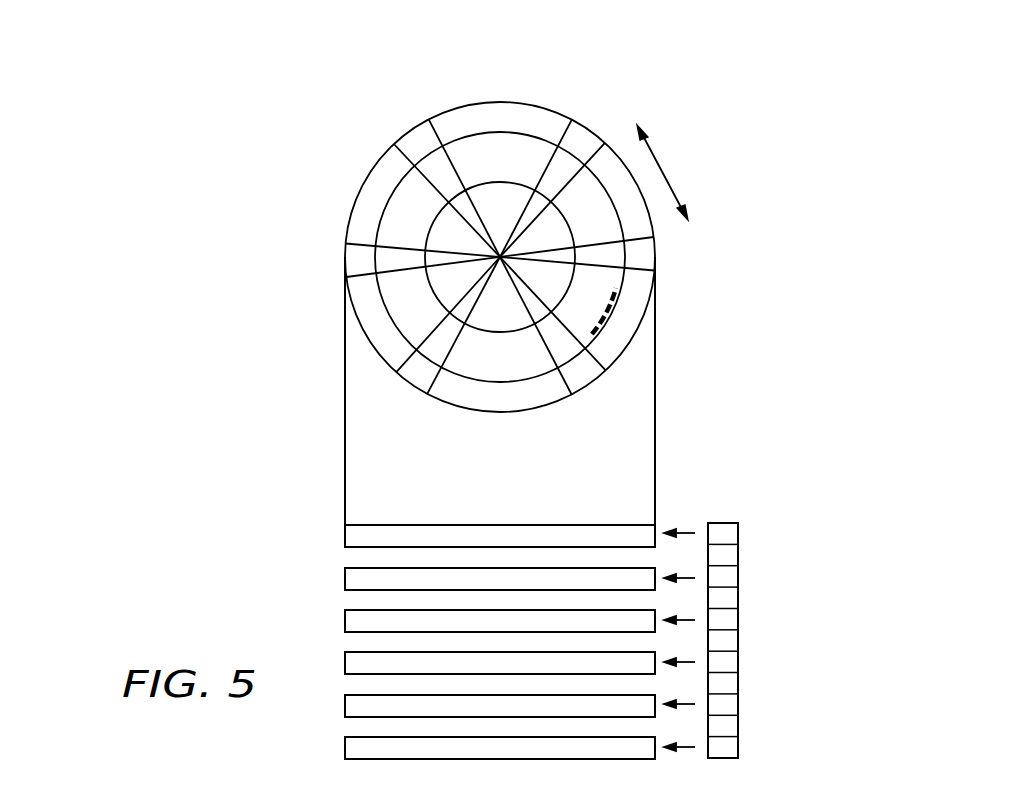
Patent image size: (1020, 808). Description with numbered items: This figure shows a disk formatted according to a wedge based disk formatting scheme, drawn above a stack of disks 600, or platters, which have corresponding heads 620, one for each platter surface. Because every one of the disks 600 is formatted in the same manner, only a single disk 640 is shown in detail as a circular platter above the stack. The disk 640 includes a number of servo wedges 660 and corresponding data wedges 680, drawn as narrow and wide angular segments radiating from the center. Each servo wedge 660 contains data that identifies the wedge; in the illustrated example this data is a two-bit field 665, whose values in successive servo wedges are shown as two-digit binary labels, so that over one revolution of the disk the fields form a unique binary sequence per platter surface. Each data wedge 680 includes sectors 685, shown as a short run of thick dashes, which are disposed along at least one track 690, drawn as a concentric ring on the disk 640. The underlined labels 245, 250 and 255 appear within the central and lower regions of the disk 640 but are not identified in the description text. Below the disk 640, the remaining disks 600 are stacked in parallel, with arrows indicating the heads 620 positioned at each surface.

The stack of disks 600 is at (272, 626).
The heads 620 is at (738, 633).
The disk 640 is at (652, 465).
The servo wedges 660 is at (423, 122).
The two-bit field 665 is at (400, 102).
The data wedges 680 is at (613, 412).
The sectors 685 is at (601, 332).
The track 690 is at (383, 312).
The inner zone 245 is at (520, 326).
The outer zone 250 is at (520, 369).
The outer edge of platter 255 is at (500, 411).